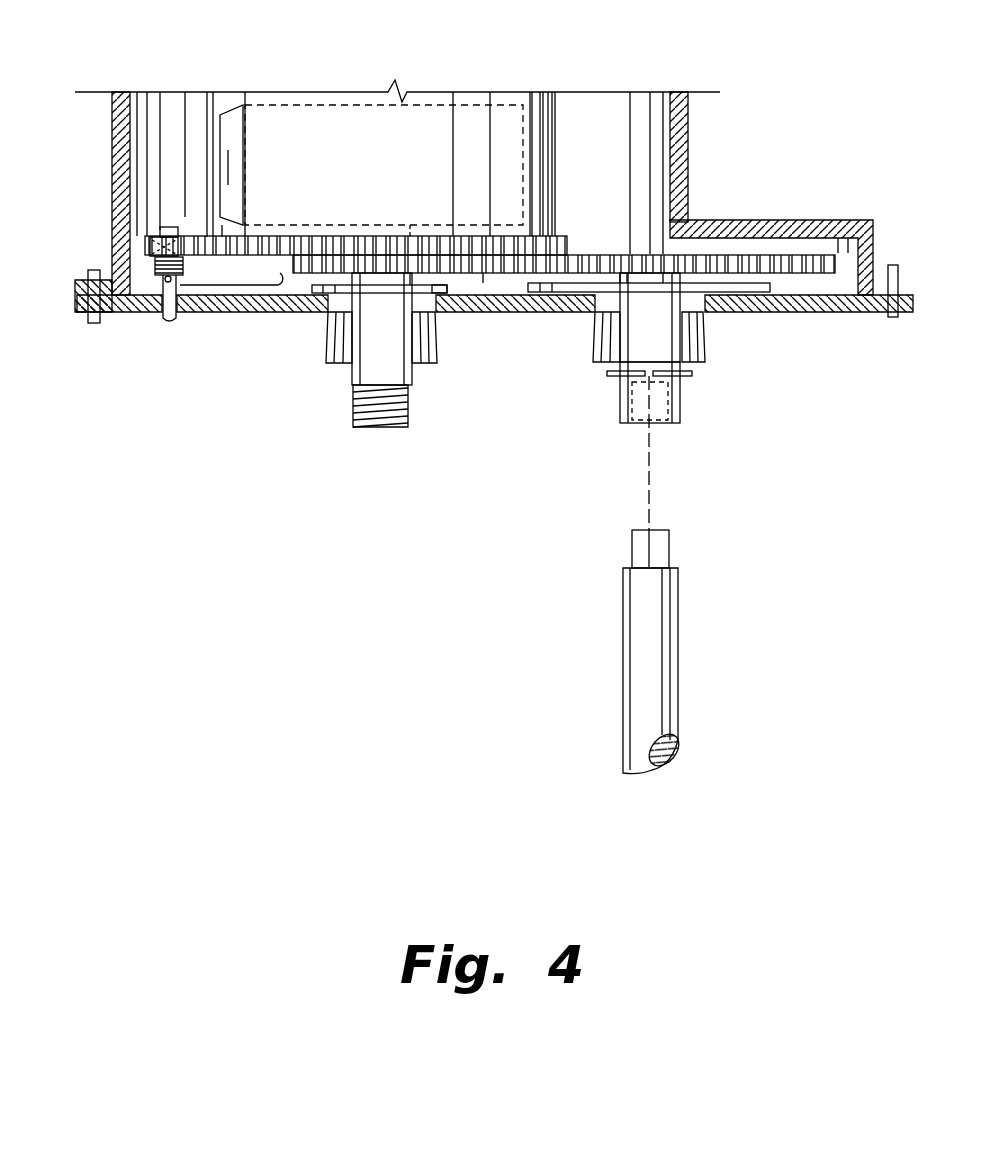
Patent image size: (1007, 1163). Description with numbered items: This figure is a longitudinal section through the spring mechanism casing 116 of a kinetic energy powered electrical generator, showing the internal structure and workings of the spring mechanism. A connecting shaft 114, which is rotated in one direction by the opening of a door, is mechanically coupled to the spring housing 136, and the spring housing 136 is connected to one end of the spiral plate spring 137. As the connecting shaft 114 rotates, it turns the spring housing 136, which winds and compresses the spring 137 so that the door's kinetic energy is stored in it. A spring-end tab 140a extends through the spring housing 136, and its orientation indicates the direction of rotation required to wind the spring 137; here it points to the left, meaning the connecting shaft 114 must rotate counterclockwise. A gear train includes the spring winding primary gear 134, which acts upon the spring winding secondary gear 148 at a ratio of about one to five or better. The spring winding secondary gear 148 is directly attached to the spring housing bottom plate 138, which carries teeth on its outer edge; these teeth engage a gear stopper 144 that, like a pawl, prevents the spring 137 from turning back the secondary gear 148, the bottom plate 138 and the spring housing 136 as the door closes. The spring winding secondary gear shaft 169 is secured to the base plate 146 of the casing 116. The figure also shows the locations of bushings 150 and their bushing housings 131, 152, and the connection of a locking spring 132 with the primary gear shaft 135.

The spring mechanism casing 116 is at (112, 175).
The spring-end tab 140a is at (205, 150).
The spring housing bottom plate 138 is at (288, 237).
The plate spring 137 is at (478, 100).
The spring housing 136 is at (537, 98).
The spring winding primary gear 134 is at (742, 262).
The gear stopper 144 is at (153, 313).
The base plate 146 is at (215, 318).
The spring winding secondary gear 148 is at (307, 313).
The bushings 150 is at (448, 290).
The bushing housing 152 is at (337, 367).
The spring winding secondary gear shaft 169 is at (408, 375).
The bushing housing 131 is at (703, 328).
The locking spring 132 is at (692, 373).
The primary gear shaft 135 is at (683, 403).
The connecting shaft 114 is at (637, 682).